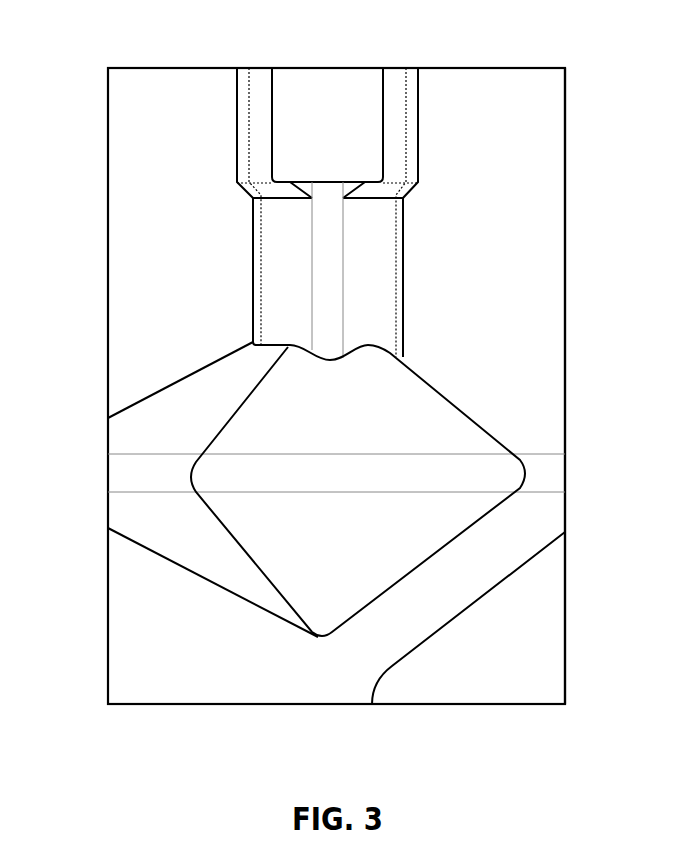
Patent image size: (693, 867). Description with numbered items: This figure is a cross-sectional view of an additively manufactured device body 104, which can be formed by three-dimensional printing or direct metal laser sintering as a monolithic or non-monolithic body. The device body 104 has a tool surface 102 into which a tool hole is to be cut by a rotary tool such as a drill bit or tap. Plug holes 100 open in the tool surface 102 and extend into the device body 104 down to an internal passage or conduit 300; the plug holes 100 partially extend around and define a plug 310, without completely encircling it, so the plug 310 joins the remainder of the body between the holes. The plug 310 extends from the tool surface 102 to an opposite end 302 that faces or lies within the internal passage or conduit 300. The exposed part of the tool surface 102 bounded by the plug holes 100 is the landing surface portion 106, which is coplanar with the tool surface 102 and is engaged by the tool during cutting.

The plug holes 100 is at (398, 152).
The tool surface 102 is at (135, 63).
The device body 104 is at (566, 200).
The landing surface portion 106 is at (383, 58).
The internal passage or conduit 300 is at (350, 272).
The opposite end 302 is at (283, 192).
The plug 310 is at (337, 115).